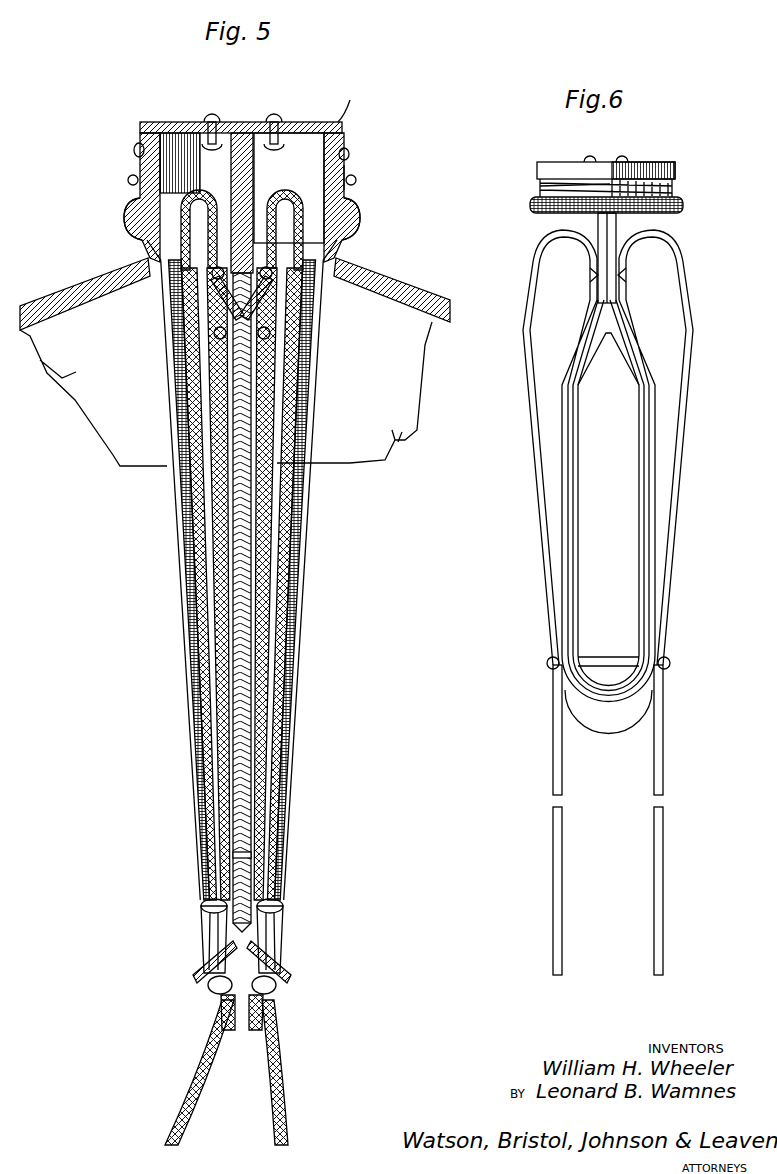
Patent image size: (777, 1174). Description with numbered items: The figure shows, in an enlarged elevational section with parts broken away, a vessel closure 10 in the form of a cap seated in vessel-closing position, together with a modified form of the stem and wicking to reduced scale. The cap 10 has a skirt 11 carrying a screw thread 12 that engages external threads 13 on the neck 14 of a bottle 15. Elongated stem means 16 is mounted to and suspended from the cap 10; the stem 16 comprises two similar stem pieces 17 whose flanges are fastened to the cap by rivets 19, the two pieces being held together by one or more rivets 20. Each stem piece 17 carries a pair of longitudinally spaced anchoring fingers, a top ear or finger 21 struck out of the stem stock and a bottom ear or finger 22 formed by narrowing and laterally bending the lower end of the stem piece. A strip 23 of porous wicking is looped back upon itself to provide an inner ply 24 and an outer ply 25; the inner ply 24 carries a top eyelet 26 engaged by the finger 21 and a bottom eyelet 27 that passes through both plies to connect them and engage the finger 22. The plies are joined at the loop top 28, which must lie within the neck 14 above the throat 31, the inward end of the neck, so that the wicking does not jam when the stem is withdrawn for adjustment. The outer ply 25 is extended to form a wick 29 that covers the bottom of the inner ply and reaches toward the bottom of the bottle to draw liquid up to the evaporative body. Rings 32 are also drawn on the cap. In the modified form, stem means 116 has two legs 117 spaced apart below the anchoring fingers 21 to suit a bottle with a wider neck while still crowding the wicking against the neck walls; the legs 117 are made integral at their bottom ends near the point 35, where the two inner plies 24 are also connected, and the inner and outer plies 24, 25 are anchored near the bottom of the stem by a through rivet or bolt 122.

In FIG. 5, the vessel closure 10 is at (345, 132).
In FIG. 6, the vessel closure 10 is at (670, 164).
In FIG. 5, the skirt 11 is at (345, 178).
In FIG. 5, the screw thread 12 is at (348, 160).
In FIG. 5, the external threads 13 is at (135, 150).
In FIG. 5, the neck 14 is at (136, 218).
In FIG. 5, the bottle 15 is at (70, 292).
In FIG. 5, the stem means 16 is at (258, 153).
In FIG. 5, the stem piece 17 is at (245, 170).
In FIG. 5, the rivet 19 is at (275, 120).
In FIG. 6, the rivet 19 is at (622, 158).
In FIG. 5, the rivet 20 is at (257, 857).
In FIG. 5, the top ear or finger 21 is at (215, 298).
In FIG. 6, the top ear or finger 21 is at (590, 274).
In FIG. 5, the bottom ear or finger 22 is at (196, 979).
In FIG. 5, the strip of porous material 23 is at (174, 520).
In FIG. 5, the inner ply 24 is at (220, 640).
In FIG. 6, the inner ply 24 is at (560, 407).
In FIG. 5, the outer ply 25 is at (188, 584).
In FIG. 6, the outer ply 25 is at (532, 452).
In FIG. 5, the top eyelet 26 is at (214, 338).
In FIG. 5, the bottom eyelet 27 is at (204, 934).
In FIG. 5, the loop top 28 is at (200, 197).
In FIG. 5, the wick 29 is at (166, 1136).
In FIG. 6, the wick 29 is at (552, 775).
In FIG. 5, the throat 31 is at (342, 124).
In FIG. 5, the rings 32 is at (354, 196).
In FIG. 6, the connection point of inner plies 35 is at (608, 712).
In FIG. 6, the modified stem means 116 is at (622, 222).
In FIG. 6, the leg 117 is at (575, 535).
In FIG. 6, the through rivet or bolt 122 is at (672, 667).